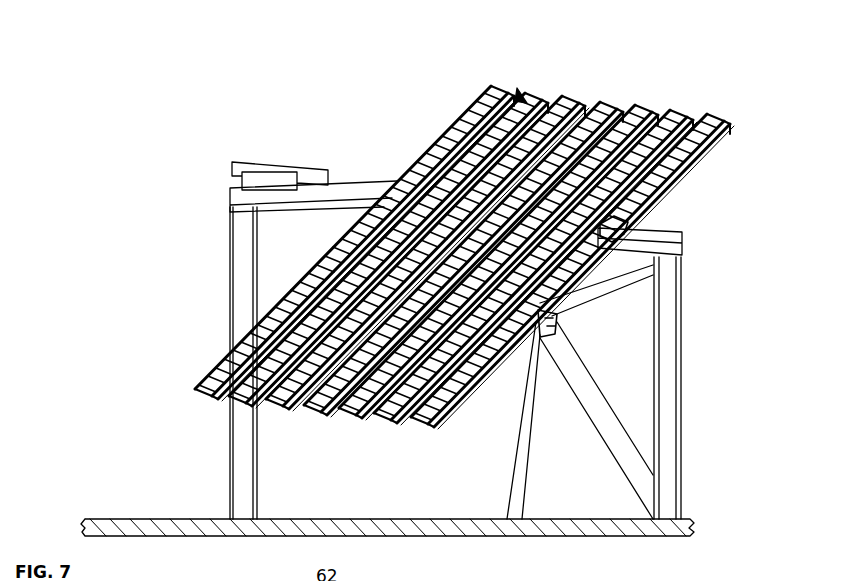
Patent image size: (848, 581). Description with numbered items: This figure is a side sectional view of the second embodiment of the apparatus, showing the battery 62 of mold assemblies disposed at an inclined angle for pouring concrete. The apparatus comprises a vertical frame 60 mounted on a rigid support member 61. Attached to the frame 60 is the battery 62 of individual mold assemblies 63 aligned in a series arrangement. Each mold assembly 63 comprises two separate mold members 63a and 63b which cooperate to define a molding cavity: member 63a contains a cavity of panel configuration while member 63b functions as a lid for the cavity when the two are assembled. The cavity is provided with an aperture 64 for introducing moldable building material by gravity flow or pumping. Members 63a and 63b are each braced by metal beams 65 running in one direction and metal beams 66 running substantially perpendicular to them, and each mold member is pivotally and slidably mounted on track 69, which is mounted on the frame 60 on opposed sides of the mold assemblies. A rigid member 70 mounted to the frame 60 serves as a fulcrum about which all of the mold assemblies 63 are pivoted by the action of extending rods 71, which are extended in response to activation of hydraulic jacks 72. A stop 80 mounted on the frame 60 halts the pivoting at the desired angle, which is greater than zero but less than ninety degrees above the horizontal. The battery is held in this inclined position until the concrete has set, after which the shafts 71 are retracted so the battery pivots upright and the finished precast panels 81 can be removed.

The vertical frame 60 is at (238, 492).
The rigid support member 61 is at (190, 517).
The battery of mold assemblies 62 is at (750, 48).
The mold assembly 63 is at (469, 254).
The mold member 63a is at (520, 253).
The mold member 63b is at (498, 251).
The aperture 64 is at (496, 238).
The metal beam 65 is at (577, 258).
The metal beam 66 is at (596, 277).
The track 69 is at (680, 240).
The rigid member 70 is at (556, 319).
The extending rod 71 is at (367, 183).
The hydraulic jack 72 is at (253, 183).
The stop 80 is at (623, 230).
The finished precast panel 81 is at (527, 103).